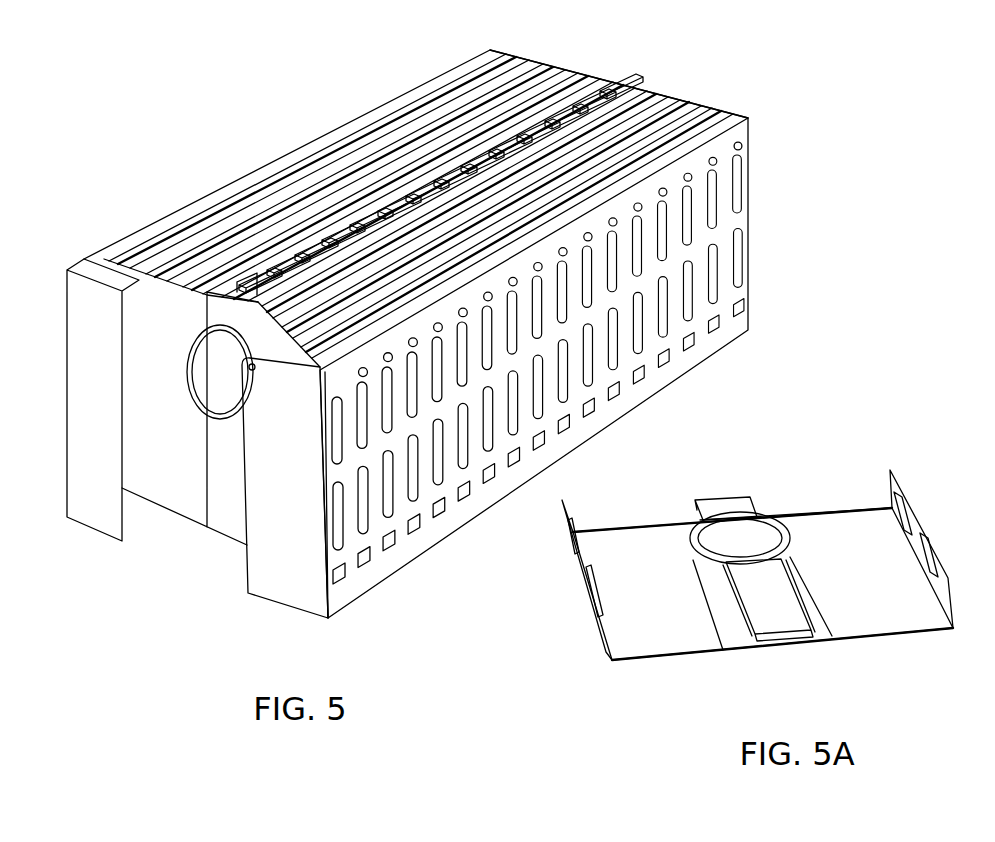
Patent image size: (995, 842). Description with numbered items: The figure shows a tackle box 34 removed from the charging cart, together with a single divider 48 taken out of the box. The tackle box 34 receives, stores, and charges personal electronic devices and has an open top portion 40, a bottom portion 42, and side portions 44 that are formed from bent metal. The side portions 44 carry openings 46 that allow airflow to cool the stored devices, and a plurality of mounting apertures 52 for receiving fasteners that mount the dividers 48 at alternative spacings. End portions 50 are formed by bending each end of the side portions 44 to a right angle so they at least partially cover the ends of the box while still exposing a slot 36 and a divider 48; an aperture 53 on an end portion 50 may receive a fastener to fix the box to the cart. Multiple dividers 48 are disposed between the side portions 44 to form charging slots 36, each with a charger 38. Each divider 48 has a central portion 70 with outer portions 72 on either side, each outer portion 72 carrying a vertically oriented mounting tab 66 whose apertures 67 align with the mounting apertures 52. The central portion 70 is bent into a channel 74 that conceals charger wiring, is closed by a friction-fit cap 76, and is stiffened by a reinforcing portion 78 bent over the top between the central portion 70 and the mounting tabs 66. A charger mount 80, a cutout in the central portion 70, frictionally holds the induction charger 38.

In FIG. 5, the tackle box 34 is at (790, 102).
In FIG. 5, the charging slots 36 is at (327, 119).
In FIG. 5, the charger 38 is at (188, 352).
In FIG. 5A, the charger 38 is at (755, 534).
In FIG. 5, the top portion 40 is at (742, 114).
In FIG. 5, the bottom portion 42 is at (142, 520).
In FIG. 5, the side portions 44 is at (620, 413).
In FIG. 5, the openings 46 is at (738, 188).
In FIG. 5, the dividers 48 is at (400, 108).
In FIG. 5A, the dividers 48 is at (841, 482).
In FIG. 5, the end portions 50 is at (292, 590).
In FIG. 5, the mounting apertures 52 is at (742, 144).
In FIG. 5, the aperture 53 is at (252, 372).
In FIG. 5A, the mounting tabs 66 is at (942, 577).
In FIG. 5A, the apertures 67 is at (562, 515).
In FIG. 5A, the central portion 70 is at (728, 505).
In FIG. 5A, the outer portions 72 is at (622, 646).
In FIG. 5A, the channel 74 is at (777, 641).
In FIG. 5, the cap 76 is at (635, 86).
In FIG. 5A, the cap 76 is at (700, 498).
In FIG. 5A, the reinforcing portion 78 is at (647, 528).
In FIG. 5, the charger mount 80 is at (266, 315).
In FIG. 5A, the charger mount 80 is at (770, 487).